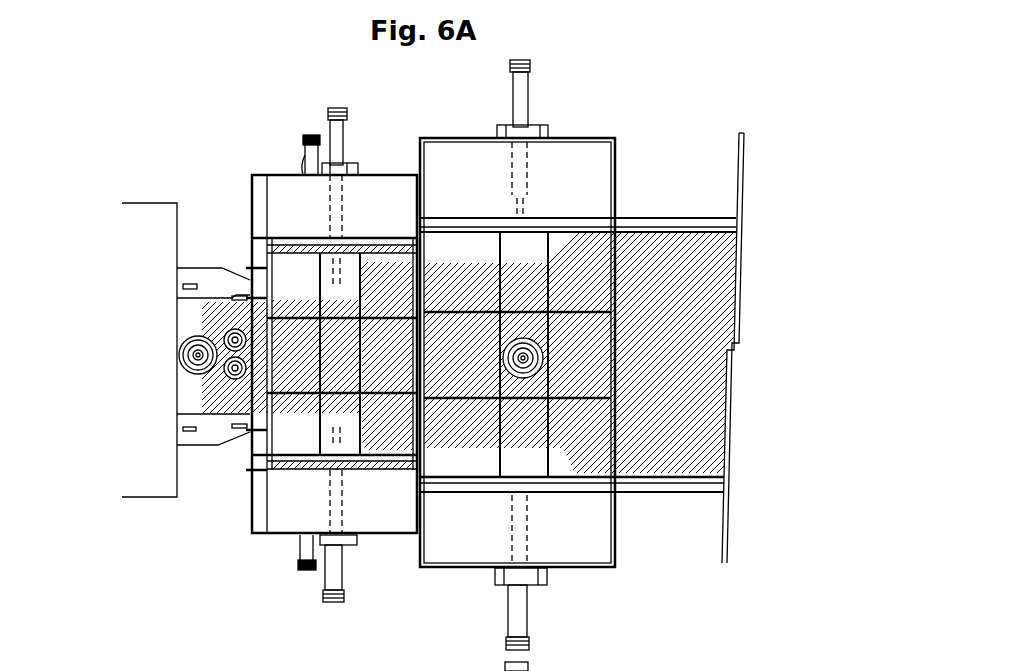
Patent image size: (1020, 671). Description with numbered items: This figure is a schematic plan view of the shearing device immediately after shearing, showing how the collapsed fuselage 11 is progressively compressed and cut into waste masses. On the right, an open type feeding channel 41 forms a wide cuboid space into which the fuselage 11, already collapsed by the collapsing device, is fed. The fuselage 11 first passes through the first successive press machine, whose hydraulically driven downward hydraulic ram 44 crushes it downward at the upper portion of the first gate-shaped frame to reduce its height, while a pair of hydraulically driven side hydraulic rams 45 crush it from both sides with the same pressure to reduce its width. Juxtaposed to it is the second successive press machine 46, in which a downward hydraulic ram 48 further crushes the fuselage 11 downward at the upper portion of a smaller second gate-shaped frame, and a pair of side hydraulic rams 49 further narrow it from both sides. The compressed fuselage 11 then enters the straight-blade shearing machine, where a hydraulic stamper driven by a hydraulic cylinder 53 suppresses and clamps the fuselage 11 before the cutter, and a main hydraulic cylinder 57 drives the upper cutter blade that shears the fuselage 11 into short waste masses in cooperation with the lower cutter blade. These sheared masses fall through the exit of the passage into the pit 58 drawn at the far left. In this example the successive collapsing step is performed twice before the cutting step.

The fuselage 11 is at (697, 339).
The open type feeding channel 41 is at (590, 124).
The downward hydraulic ram 44 is at (579, 244).
The side hydraulic rams 45 is at (572, 522).
The second successive press machine 46 is at (394, 157).
The downward hydraulic ram 48 is at (293, 283).
The side hydraulic rams 49 is at (336, 524).
The hydraulic cylinder 53 is at (209, 455).
The main hydraulic cylinder 57 is at (213, 287).
The pit 58 is at (149, 350).